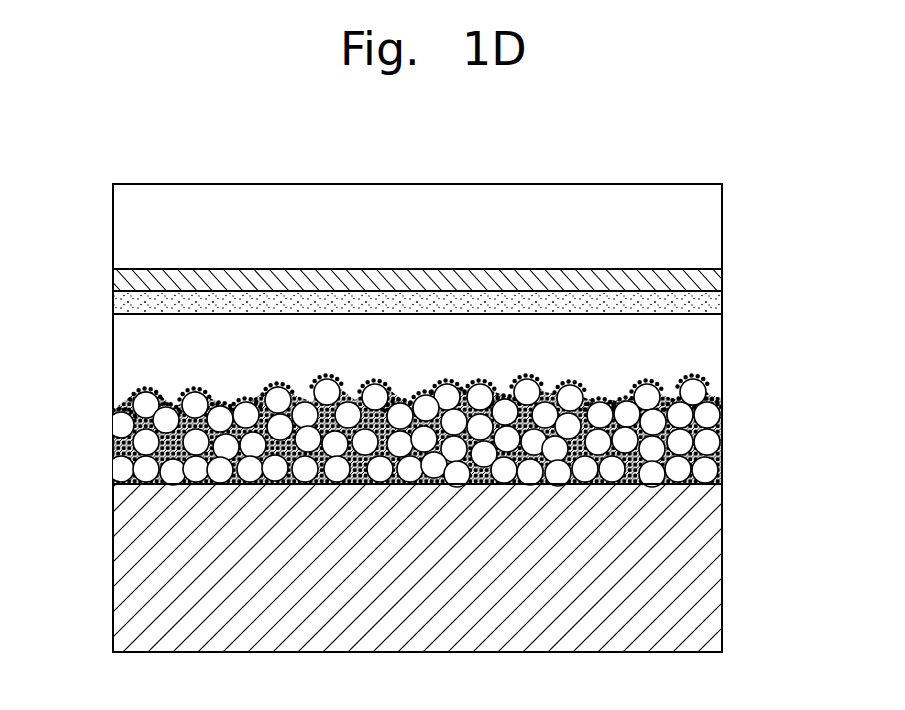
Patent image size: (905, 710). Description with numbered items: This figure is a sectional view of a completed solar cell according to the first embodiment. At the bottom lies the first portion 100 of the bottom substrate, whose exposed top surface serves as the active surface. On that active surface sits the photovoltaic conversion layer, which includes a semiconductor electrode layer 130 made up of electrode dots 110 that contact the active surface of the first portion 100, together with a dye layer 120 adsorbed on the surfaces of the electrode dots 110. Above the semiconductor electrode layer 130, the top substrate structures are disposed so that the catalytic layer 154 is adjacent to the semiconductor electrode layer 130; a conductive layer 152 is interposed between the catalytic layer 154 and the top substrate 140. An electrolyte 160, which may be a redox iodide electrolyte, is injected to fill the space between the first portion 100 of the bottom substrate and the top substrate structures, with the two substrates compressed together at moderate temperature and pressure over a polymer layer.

The first portion of the bottom substrate 100 is at (711, 553).
The electrode dots 110 is at (120, 450).
The dye layer 120 is at (118, 404).
The semiconductor electrode layer 130 is at (421, 429).
The top substrate 140 is at (711, 222).
The conductive layer 152 is at (711, 278).
The catalytic layer 154 is at (711, 302).
The electrolyte 160 is at (711, 338).